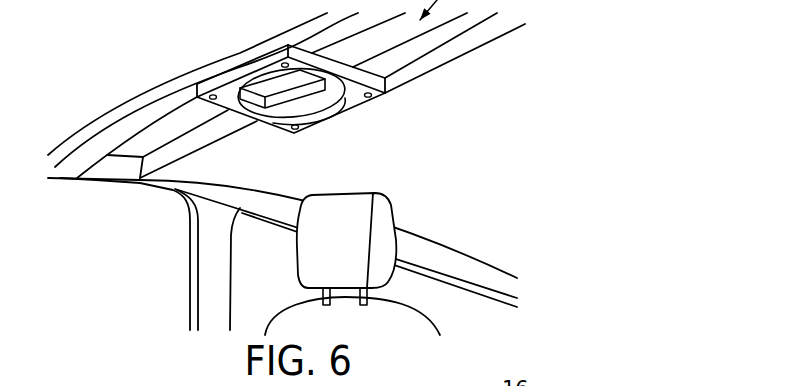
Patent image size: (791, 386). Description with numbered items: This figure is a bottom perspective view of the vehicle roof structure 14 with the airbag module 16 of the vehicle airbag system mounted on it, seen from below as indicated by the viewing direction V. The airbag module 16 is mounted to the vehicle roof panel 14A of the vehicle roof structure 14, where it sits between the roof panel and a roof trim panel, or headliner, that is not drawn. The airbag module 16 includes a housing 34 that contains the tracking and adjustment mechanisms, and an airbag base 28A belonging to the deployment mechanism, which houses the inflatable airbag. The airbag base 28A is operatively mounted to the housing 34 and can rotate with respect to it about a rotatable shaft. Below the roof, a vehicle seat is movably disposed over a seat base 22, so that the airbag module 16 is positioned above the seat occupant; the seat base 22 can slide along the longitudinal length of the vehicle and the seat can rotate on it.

The vehicle roof structure 14 is at (477, 262).
The vehicle roof panel 14A is at (443, 62).
The airbag module 16 is at (213, 78).
The seat base 22 is at (357, 193).
The airbag base 28A is at (307, 96).
The housing 34 is at (386, 88).
The viewing direction V is at (543, 107).